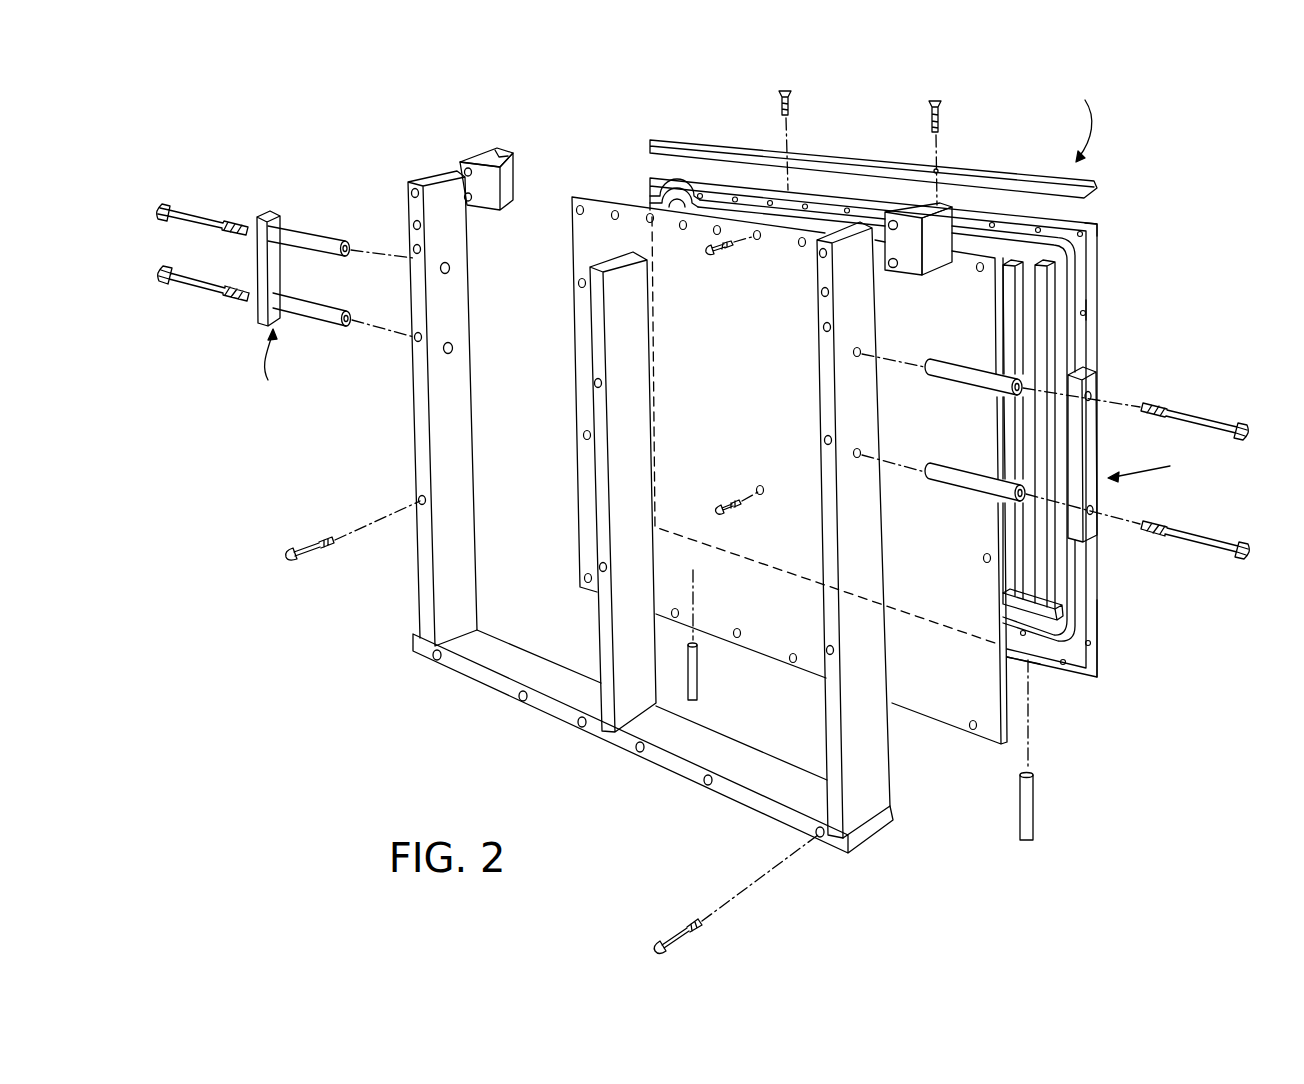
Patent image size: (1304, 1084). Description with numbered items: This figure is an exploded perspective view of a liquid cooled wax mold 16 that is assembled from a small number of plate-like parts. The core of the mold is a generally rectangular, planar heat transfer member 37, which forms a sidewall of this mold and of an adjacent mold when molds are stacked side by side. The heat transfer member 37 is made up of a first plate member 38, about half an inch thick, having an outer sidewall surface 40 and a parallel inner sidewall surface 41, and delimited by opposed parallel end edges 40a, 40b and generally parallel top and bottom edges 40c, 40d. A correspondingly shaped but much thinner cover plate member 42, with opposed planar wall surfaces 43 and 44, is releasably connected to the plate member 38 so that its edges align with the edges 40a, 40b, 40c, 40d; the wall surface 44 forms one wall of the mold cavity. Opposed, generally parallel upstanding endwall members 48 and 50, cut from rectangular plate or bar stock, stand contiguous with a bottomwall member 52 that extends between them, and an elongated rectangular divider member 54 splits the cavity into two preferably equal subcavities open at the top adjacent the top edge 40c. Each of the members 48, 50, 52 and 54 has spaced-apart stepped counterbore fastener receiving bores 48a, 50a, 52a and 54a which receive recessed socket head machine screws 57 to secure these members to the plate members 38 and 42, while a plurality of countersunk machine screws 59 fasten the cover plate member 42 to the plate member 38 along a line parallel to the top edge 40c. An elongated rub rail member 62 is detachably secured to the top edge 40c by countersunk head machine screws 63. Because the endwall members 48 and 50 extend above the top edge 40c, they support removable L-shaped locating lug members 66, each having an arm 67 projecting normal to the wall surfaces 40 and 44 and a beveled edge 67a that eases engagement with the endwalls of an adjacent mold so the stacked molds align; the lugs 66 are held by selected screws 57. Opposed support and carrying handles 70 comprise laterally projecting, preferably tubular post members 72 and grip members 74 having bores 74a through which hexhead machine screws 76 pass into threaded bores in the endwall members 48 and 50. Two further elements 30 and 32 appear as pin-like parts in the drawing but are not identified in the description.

The liquid cooled wax mold 16 is at (1069, 121).
The lower pin 30 is at (1035, 795).
The pin 32 is at (699, 676).
The heat transfer member 37 is at (1020, 750).
The plate member 38 is at (1100, 632).
The outer sidewall surface 40 is at (1100, 243).
The end edge 40a is at (1068, 300).
The end edge 40b is at (650, 200).
The top edge 40c is at (1088, 221).
The bottom edge 40d is at (1033, 664).
The inner sidewall surface 41 is at (1085, 310).
The cover plate member 42 is at (983, 739).
The planar wall surface 43 is at (1006, 290).
The planar wall surface 44 is at (940, 708).
The endwall member 48 is at (414, 396).
The fastener receiving bores 48a is at (410, 193).
The endwall member 50 is at (818, 383).
The fastener receiving bores 50a is at (822, 256).
The bottomwall member 52 is at (547, 713).
The fastener receiving bores 52a is at (520, 699).
The divider member 54 is at (597, 526).
The fastener receiving bores 54a is at (601, 384).
The socket head machine screws 57 is at (308, 557).
The countersunk machine screws 59 is at (708, 255).
The rub rail member 62 is at (990, 170).
The countersunk head machine screws 63 is at (928, 112).
The locating lug member 66 is at (510, 208).
The arm 67 is at (493, 150).
The beveled edge 67a is at (515, 163).
The support and carrying handles 70 is at (692, 381).
The post members 72 is at (323, 306).
The grip members 74 is at (259, 278).
The bores 74a is at (1094, 394).
The hexhead machine screws 76 is at (158, 220).